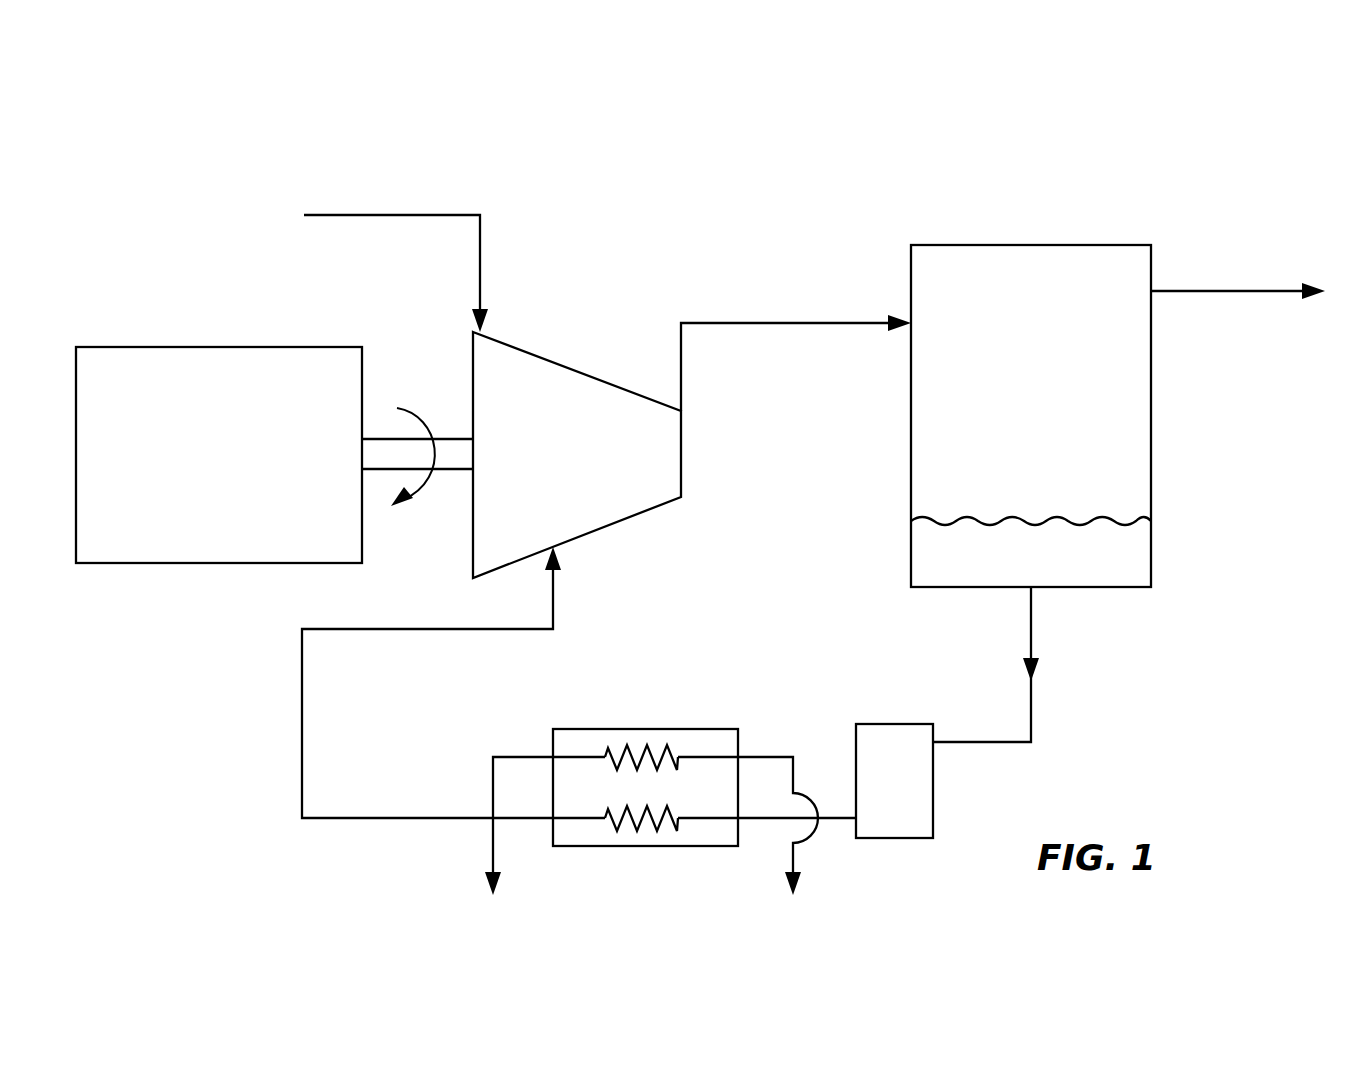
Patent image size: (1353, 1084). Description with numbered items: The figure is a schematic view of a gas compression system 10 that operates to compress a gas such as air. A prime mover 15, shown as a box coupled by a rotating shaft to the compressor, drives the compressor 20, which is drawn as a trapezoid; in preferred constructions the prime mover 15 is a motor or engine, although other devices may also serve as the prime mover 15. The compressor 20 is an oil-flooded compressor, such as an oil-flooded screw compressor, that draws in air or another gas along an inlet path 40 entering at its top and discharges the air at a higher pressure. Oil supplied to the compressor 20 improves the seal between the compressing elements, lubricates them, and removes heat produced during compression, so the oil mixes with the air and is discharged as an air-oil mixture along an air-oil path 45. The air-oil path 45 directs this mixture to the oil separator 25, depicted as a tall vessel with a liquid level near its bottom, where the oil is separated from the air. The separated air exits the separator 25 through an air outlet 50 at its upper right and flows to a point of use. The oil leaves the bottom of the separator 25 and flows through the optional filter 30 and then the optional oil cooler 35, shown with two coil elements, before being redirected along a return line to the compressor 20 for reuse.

The gas compression system 10 is at (800, 164).
The prime mover 15 is at (182, 347).
The compressor 20 is at (576, 410).
The oil separator 25 is at (1114, 419).
The filter 30 is at (896, 826).
The oil cooler 35 is at (658, 729).
The inlet path 40 is at (383, 215).
The air-oil path 45 is at (768, 323).
The air outlet 50 is at (1217, 291).